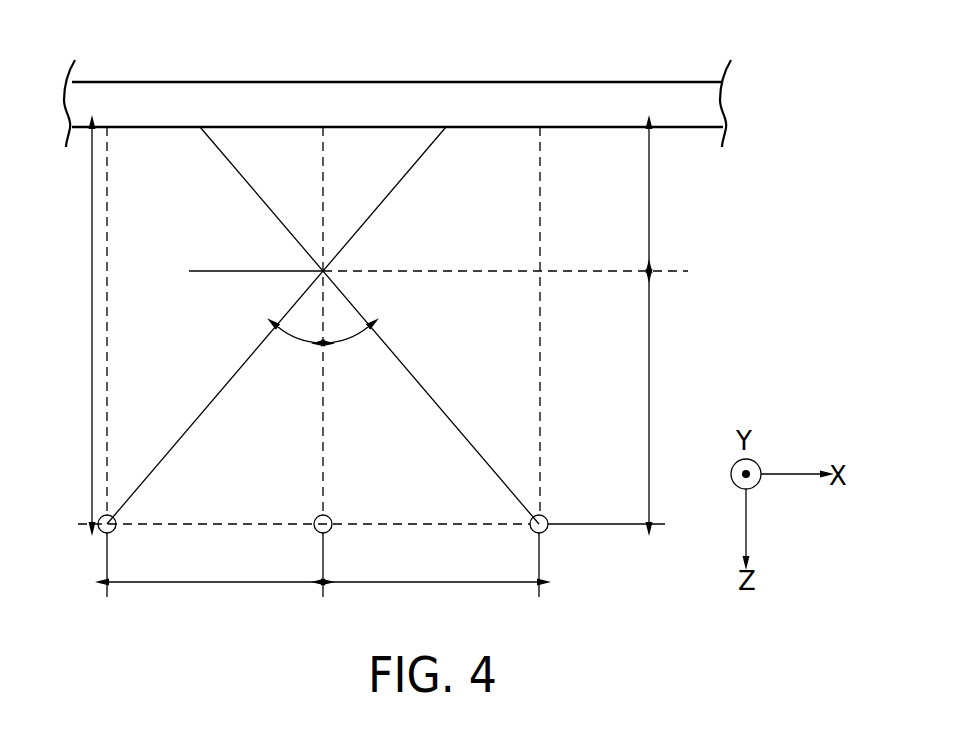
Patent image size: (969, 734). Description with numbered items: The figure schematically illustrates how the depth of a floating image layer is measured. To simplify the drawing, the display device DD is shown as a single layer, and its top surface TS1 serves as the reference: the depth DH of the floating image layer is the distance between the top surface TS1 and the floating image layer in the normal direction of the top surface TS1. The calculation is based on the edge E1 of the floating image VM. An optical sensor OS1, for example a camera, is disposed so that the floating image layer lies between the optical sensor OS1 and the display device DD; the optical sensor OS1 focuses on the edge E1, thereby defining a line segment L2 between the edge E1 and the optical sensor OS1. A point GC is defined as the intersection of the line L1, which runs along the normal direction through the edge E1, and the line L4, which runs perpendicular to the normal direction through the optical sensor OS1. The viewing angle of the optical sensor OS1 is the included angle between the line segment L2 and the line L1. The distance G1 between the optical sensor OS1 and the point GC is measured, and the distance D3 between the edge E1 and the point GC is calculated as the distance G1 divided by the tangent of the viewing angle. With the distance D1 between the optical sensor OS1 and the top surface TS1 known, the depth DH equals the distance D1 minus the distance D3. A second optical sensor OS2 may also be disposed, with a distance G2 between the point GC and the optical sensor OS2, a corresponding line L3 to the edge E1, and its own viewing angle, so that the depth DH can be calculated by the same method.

The display device DD is at (686, 100).
The top surface TS1 is at (565, 127).
The floating image VM is at (215, 270).
The edge E1 is at (325, 263).
The line L1 is at (330, 425).
The line segment L2 is at (218, 396).
The third line (optical path from second optical sensor) L3 is at (425, 396).
The line L4 is at (405, 523).
The optical sensor OS1 is at (100, 532).
The optical sensor OS2 is at (547, 531).
The point GC is at (318, 516).
The distance D1 is at (78, 325).
The depth DH is at (625, 199).
The distance D3 is at (626, 397).
The distance G1 is at (215, 569).
The distance G2 is at (431, 573).